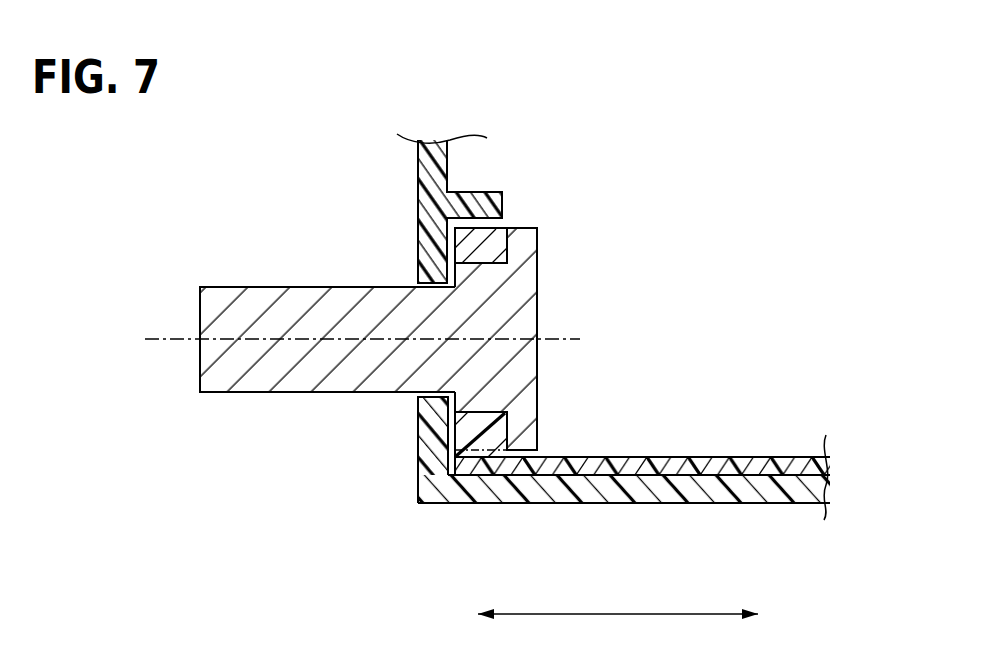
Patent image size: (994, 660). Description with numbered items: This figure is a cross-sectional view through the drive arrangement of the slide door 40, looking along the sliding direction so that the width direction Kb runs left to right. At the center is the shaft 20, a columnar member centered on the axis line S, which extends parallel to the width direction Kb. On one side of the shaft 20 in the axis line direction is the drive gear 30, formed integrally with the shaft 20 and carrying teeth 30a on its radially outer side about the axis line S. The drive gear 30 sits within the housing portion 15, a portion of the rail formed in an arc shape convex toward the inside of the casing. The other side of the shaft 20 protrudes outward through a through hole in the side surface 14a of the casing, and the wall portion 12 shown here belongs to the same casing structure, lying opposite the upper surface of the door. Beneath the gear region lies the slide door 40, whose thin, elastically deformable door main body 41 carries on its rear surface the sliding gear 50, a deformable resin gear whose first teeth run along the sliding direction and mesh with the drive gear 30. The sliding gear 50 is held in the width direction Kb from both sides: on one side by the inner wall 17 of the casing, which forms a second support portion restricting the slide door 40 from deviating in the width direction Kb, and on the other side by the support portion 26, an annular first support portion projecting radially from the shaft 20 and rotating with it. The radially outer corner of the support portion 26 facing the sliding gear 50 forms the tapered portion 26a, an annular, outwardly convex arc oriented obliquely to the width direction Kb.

The axis line S is at (168, 340).
The shaft 20 is at (247, 392).
The support portion 26 is at (522, 434).
The tapered portion 26a is at (510, 235).
The drive gear 30 is at (515, 227).
The teeth 30a is at (467, 250).
The housing portion 15 is at (475, 192).
The side surface 14a is at (418, 481).
The base plate 12 is at (583, 503).
The slide door 40 is at (688, 457).
The door main body 41 is at (637, 465).
The sliding gear 50 is at (487, 437).
The inner wall 17 is at (449, 440).
The width direction Kb is at (618, 628).